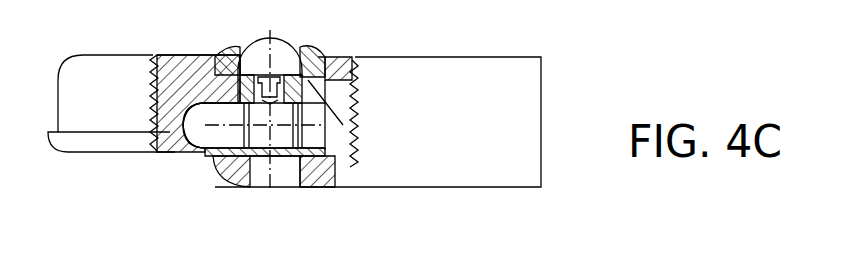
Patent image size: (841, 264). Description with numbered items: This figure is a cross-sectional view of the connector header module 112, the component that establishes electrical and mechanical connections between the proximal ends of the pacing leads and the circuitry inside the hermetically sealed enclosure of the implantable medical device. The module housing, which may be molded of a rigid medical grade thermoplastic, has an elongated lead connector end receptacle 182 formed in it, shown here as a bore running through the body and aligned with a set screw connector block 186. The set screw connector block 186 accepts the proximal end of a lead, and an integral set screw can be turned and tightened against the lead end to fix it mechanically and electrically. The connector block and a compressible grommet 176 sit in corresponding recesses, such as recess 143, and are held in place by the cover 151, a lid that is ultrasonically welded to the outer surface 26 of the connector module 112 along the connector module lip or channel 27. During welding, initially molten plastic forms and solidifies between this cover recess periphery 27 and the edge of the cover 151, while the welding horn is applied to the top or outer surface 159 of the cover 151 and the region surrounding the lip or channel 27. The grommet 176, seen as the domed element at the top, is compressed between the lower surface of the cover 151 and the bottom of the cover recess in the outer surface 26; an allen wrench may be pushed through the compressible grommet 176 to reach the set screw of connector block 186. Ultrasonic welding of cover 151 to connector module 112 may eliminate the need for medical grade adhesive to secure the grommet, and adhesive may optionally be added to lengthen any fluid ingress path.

The surface 26 is at (455, 57).
The connector header module 112 is at (555, 36).
The top or outer surface of cover 159 is at (173, 53).
The grommet 176 is at (282, 42).
The cover 151 is at (227, 44).
The lip or channel 27 is at (345, 58).
The lead connector end receptacle 182 is at (203, 133).
The recess 143 is at (262, 158).
The set screw connector block 186 is at (308, 132).